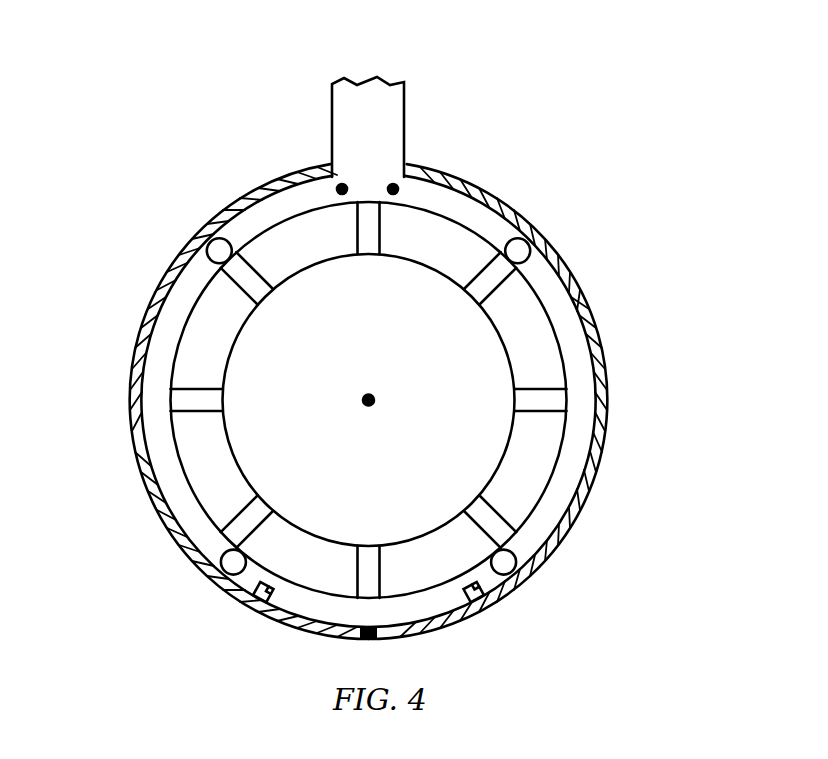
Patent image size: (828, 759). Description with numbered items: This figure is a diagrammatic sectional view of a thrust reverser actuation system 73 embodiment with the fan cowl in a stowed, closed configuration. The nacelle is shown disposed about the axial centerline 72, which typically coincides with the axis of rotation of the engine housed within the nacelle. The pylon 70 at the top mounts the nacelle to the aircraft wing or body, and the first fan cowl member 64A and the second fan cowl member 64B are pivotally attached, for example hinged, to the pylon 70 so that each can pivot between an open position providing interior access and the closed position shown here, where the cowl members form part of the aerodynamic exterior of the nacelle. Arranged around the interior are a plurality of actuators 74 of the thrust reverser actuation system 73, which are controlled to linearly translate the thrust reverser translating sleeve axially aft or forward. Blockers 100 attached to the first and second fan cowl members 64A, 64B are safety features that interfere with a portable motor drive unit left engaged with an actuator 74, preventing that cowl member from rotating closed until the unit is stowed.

The pylon 70 is at (392, 115).
The axial centerline 72 is at (372, 412).
The thrust reverser actuation system 73 is at (670, 396).
The actuator 74 is at (207, 262).
The first fan cowl member 64A is at (146, 312).
The second fan cowl member 64B is at (593, 311).
The blocker 100 is at (258, 599).